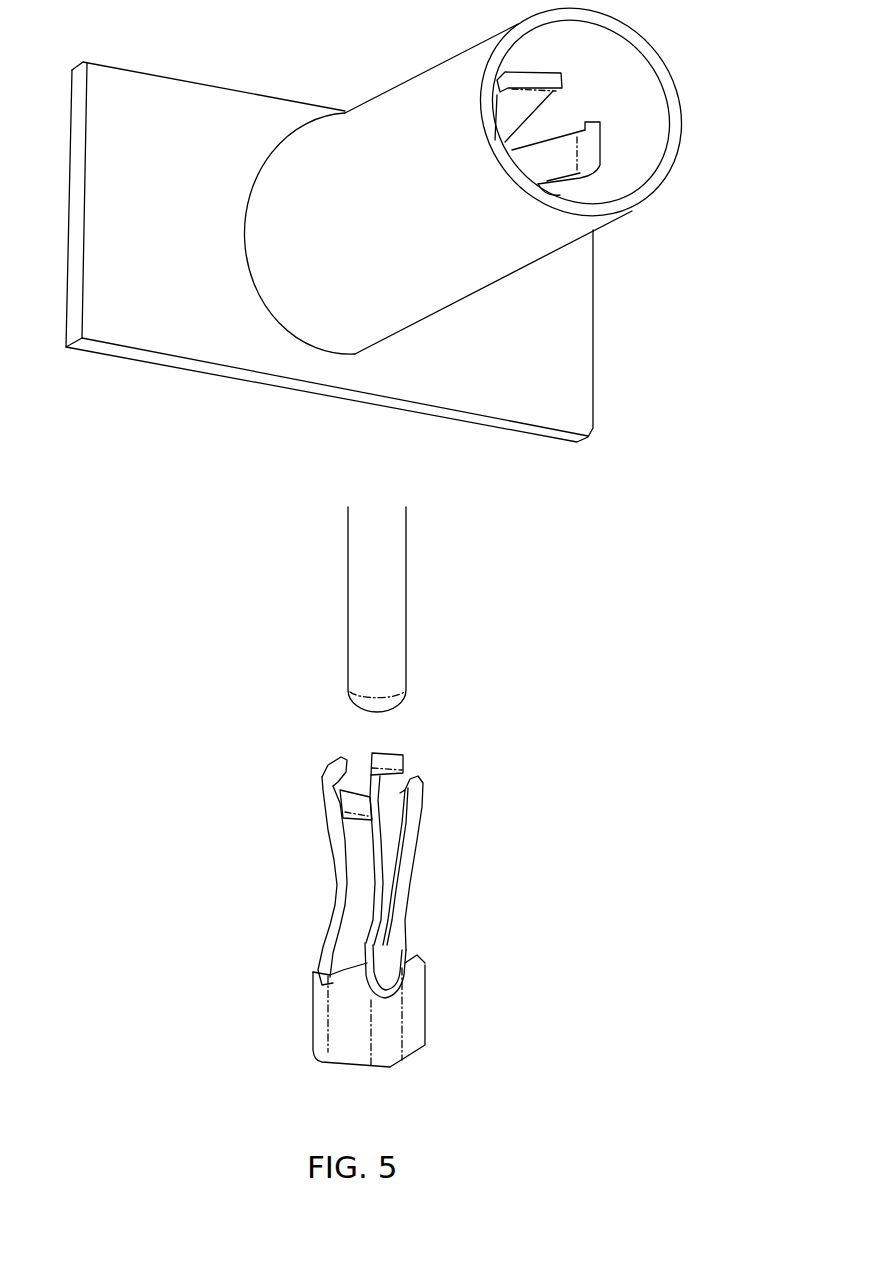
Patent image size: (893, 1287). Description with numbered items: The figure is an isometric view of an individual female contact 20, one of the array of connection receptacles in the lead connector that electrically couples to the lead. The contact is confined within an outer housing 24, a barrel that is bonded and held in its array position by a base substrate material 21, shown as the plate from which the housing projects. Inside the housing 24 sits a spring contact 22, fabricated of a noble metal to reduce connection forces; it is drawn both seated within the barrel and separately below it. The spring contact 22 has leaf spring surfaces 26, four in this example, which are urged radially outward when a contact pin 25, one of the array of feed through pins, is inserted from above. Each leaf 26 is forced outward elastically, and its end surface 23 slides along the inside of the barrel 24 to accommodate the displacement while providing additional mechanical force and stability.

The female contact 20 is at (387, 241).
The base substrate material 21 is at (105, 320).
The spring contact 22 is at (444, 541).
The end surface 23 is at (606, 177).
The outer housing 24 is at (440, 243).
The contact pin 25 is at (370, 606).
The leaf spring surface 26 is at (345, 882).